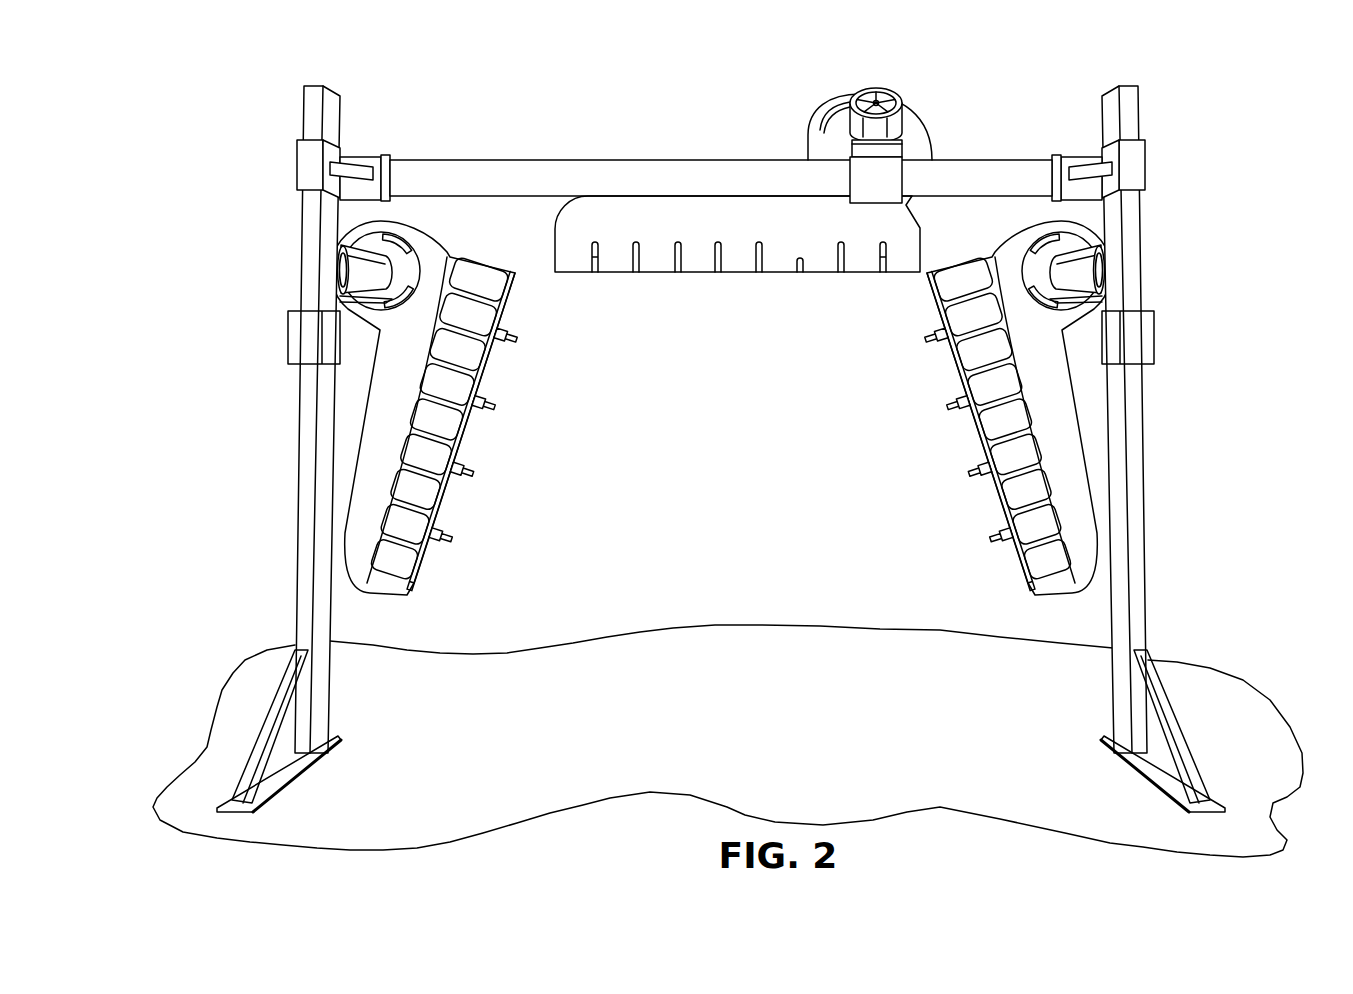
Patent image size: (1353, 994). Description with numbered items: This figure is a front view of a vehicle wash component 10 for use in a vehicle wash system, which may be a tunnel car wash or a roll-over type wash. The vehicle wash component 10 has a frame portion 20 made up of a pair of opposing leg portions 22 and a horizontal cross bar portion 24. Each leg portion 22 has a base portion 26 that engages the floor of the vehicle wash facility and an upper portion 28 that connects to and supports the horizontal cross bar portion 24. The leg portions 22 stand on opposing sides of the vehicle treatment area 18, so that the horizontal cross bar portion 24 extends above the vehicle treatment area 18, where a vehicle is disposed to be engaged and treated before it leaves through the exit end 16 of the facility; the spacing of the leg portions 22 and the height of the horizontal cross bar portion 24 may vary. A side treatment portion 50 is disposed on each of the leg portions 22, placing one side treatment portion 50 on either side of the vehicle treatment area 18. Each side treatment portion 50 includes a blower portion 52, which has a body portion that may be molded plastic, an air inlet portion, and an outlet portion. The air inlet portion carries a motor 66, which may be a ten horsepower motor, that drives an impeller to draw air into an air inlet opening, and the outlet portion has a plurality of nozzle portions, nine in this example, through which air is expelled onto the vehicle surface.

The vehicle wash component 10 is at (522, 143).
The exit end 16 is at (706, 545).
The vehicle treatment area 18 is at (706, 705).
The frame portion 20 is at (975, 135).
The leg portions 22 is at (300, 478).
The horizontal cross bar portion 24 is at (673, 175).
The base portion 26 is at (324, 722).
The upper portion 28 is at (301, 124).
The side treatment portion 50 is at (430, 573).
The blower portion 52 is at (446, 425).
The motor 66 is at (877, 97).